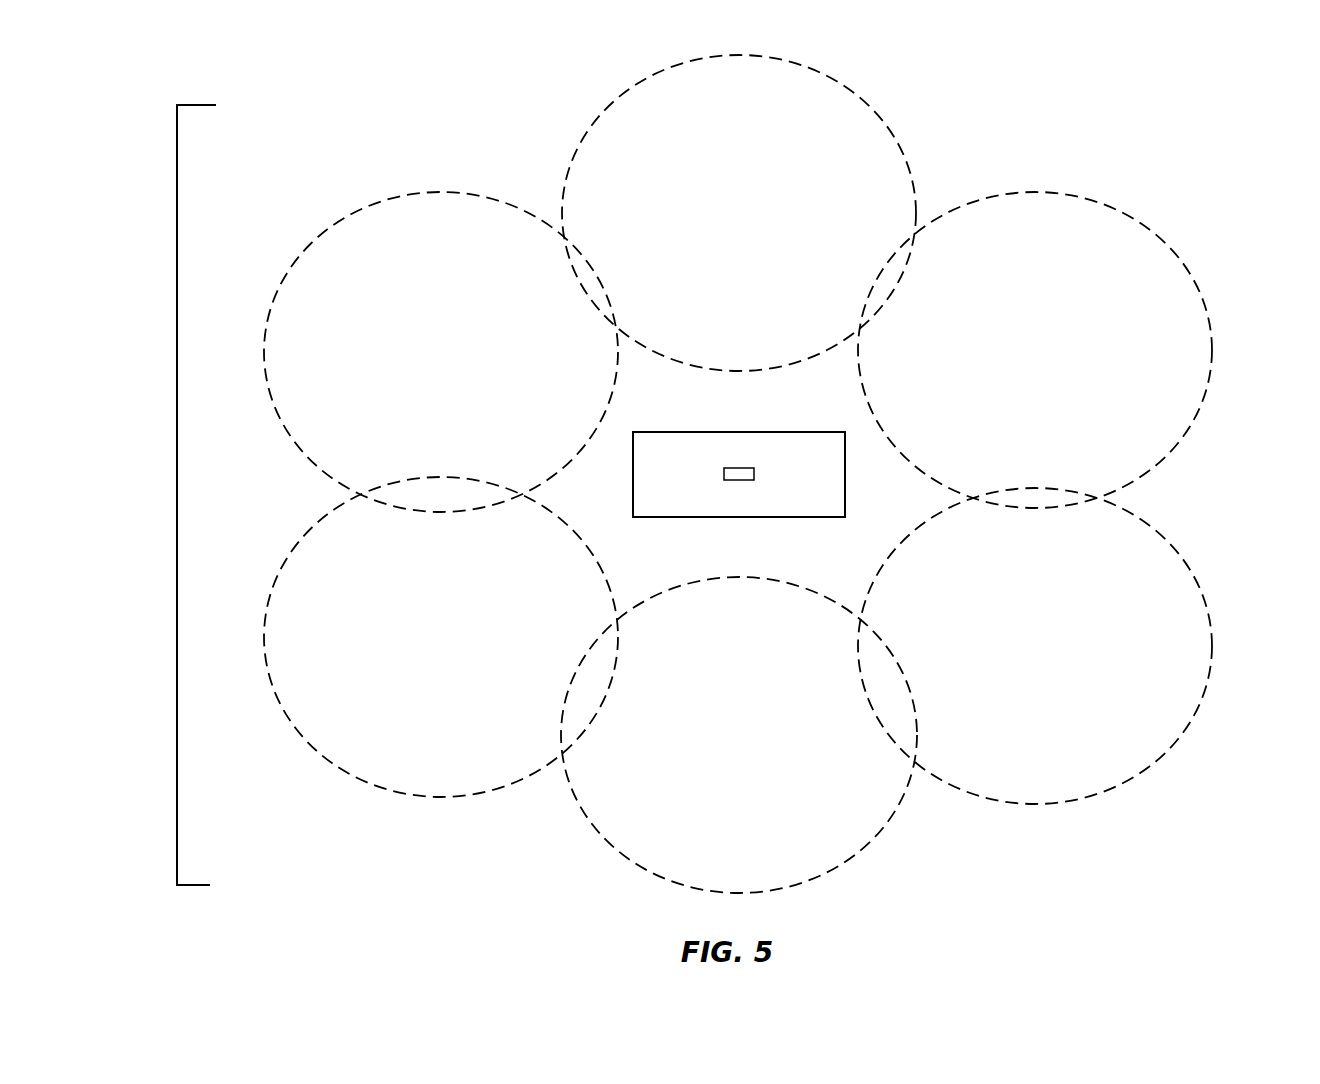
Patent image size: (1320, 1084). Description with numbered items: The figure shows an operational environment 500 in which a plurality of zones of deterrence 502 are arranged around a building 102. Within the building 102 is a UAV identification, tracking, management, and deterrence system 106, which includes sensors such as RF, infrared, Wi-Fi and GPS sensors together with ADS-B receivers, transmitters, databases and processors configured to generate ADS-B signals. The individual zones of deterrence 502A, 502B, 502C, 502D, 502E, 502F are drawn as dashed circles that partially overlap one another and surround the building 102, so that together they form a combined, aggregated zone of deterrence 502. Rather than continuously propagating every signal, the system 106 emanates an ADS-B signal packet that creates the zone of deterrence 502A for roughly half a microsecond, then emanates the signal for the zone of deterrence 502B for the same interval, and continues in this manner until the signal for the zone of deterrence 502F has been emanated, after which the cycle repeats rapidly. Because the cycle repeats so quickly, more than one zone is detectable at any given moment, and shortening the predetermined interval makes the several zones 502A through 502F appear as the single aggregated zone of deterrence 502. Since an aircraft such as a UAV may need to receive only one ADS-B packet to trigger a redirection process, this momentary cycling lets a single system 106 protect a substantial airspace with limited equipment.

The coverage system 500 is at (1210, 122).
The zones of deterrence 502 is at (177, 508).
The zone of deterrence 502A is at (739, 213).
The zone of deterrence 502B is at (441, 352).
The zone of deterrence 502C is at (441, 637).
The zone of deterrence 502D is at (739, 735).
The zone of deterrence 502E is at (1035, 646).
The zone of deterrence 502F is at (1035, 350).
The building 102 is at (633, 482).
The UAV identification, tracking, management, and deterrence system 106 is at (726, 474).